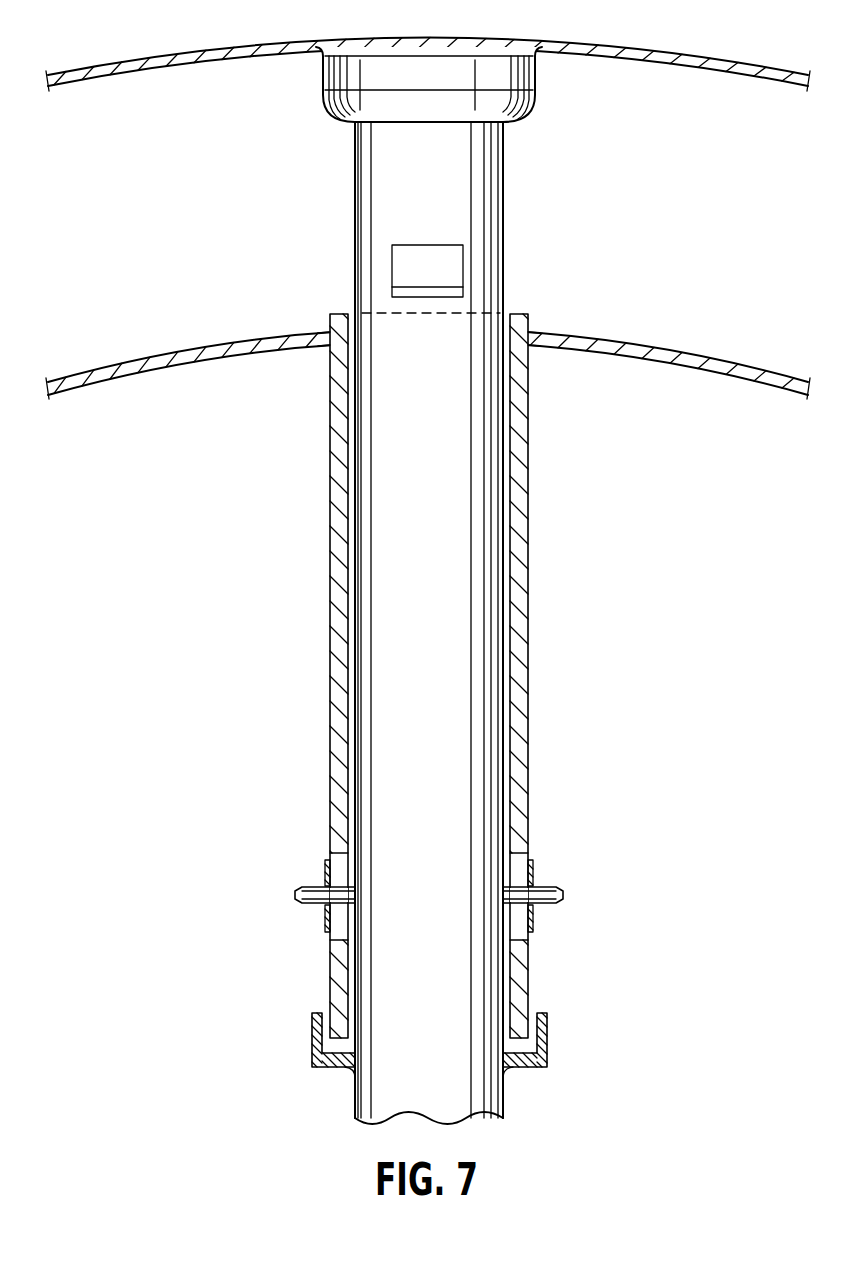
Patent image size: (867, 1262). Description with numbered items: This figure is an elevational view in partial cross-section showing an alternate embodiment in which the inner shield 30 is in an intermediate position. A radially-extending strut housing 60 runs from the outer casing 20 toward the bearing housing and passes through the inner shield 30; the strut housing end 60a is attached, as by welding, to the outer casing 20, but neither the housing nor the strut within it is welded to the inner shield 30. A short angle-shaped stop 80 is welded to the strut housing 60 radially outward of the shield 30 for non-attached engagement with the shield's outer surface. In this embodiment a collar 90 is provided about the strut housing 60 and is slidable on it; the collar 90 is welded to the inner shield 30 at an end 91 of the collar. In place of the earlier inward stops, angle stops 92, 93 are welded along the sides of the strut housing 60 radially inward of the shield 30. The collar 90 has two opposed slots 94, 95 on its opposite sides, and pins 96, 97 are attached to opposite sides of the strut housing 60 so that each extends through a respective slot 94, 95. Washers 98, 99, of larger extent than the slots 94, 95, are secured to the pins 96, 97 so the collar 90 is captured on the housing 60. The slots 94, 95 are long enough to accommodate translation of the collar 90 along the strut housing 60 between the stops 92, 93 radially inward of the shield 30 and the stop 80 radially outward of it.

The outer casing 20 is at (122, 62).
The inner shield 30 is at (86, 375).
The strut housing 60 is at (355, 178).
The strut housing end 60a is at (538, 66).
The angle-shaped stop 80 is at (425, 248).
The collar 90 is at (330, 507).
The collar end 91 is at (330, 346).
The angle stop 92 is at (312, 1040).
The angle stop 93 is at (547, 1040).
The slot 94 is at (338, 936).
The slot 95 is at (522, 937).
The pin 96 is at (295, 895).
The pin 97 is at (563, 895).
The washer 98 is at (325, 866).
The washer 99 is at (533, 866).